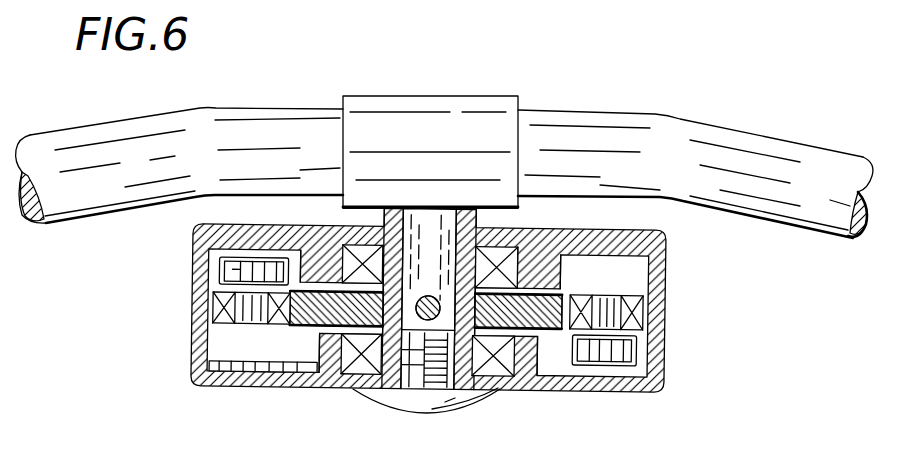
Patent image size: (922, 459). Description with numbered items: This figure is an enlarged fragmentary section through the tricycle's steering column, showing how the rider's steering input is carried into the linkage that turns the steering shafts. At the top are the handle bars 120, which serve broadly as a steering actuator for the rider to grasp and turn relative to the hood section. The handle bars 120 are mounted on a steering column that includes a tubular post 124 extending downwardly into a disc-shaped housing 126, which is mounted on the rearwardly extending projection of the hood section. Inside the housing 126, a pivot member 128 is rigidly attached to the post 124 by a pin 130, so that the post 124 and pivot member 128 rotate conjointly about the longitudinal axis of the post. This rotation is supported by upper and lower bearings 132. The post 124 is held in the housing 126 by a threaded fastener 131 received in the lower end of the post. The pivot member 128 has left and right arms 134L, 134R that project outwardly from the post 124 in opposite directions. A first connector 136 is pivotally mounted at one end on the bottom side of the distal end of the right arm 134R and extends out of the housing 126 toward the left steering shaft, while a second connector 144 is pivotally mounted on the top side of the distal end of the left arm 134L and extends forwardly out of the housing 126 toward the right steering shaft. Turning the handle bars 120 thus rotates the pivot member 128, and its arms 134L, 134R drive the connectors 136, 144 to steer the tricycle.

The handle bars 120 is at (570, 110).
The tubular post 124 is at (493, 264).
The housing 126 is at (192, 317).
The pivot member 128 is at (563, 297).
The pin 130 is at (398, 340).
The threaded fastener 131 is at (412, 398).
The bearings 132 is at (362, 256).
The left arm 134L is at (300, 332).
The right arm 134R is at (622, 393).
The first connector 136 is at (633, 353).
The second connector 144 is at (236, 272).